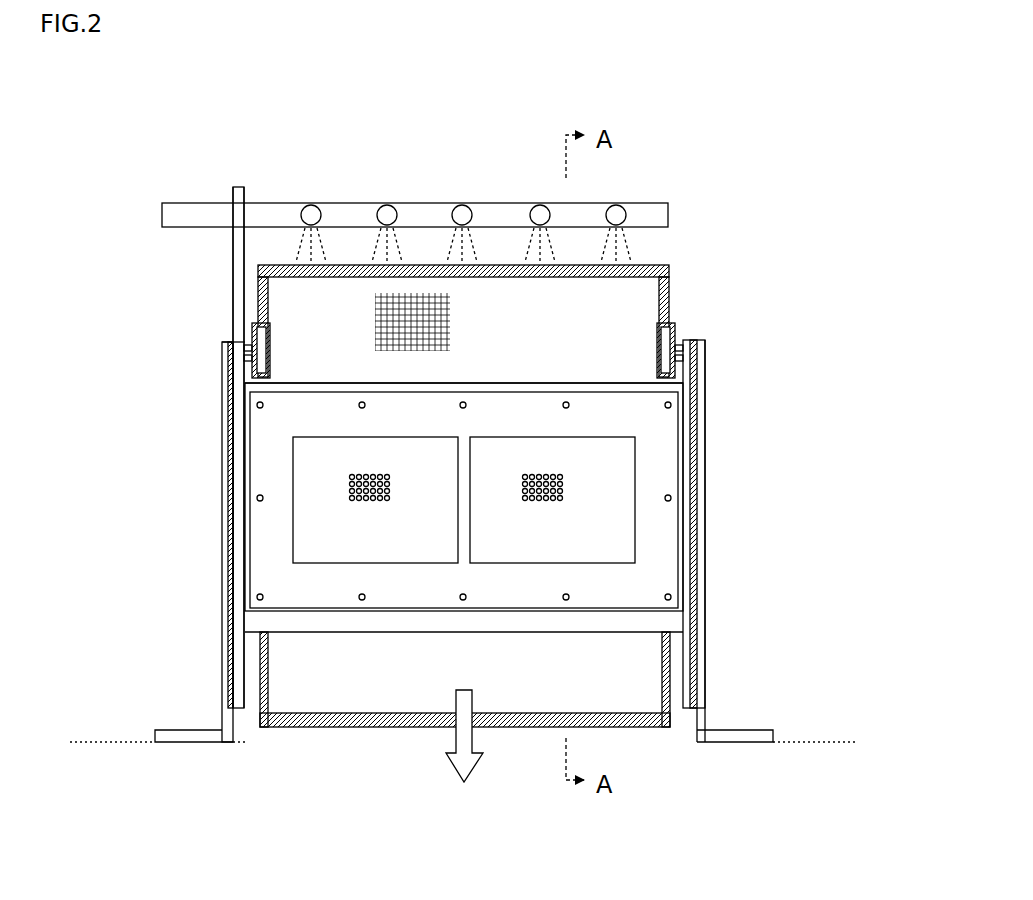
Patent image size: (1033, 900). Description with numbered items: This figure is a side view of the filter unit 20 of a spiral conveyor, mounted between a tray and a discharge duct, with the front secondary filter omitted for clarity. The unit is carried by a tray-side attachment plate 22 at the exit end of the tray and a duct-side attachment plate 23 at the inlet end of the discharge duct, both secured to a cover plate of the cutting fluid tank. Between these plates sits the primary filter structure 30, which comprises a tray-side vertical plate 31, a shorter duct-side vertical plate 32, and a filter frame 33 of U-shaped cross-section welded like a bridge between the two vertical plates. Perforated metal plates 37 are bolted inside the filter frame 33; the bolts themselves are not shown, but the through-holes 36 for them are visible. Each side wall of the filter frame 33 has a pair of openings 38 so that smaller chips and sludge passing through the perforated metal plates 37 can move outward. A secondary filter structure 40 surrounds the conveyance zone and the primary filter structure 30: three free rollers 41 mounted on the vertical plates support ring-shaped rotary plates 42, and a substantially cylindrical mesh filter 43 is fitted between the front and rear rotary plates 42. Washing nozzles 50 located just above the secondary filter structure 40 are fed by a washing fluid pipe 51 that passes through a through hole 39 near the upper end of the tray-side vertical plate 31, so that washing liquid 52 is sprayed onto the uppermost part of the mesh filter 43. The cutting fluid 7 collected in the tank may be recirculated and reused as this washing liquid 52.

The cutting fluid 7 is at (455, 738).
The filter unit 20 is at (212, 127).
The tray-side attachment plate 22 is at (178, 728).
The duct-side attachment plate 23 is at (748, 728).
The primary filter structure 30 is at (467, 514).
The tray-side vertical plate 31 is at (236, 300).
The duct-side vertical plate 32 is at (688, 540).
The filter frame 33 is at (605, 385).
The through-holes 36 is at (257, 595).
The perforated metal plates 37 is at (610, 521).
The openings 38 is at (320, 565).
The through hole 39 is at (237, 187).
The secondary filter structure 40 is at (458, 489).
The free rollers 41 is at (252, 363).
The rotary plates 42 is at (258, 285).
The mesh filter 43 is at (497, 305).
The washing nozzles 50 is at (453, 203).
The washing fluid pipe 51 is at (580, 203).
The washing liquid 52 is at (300, 240).